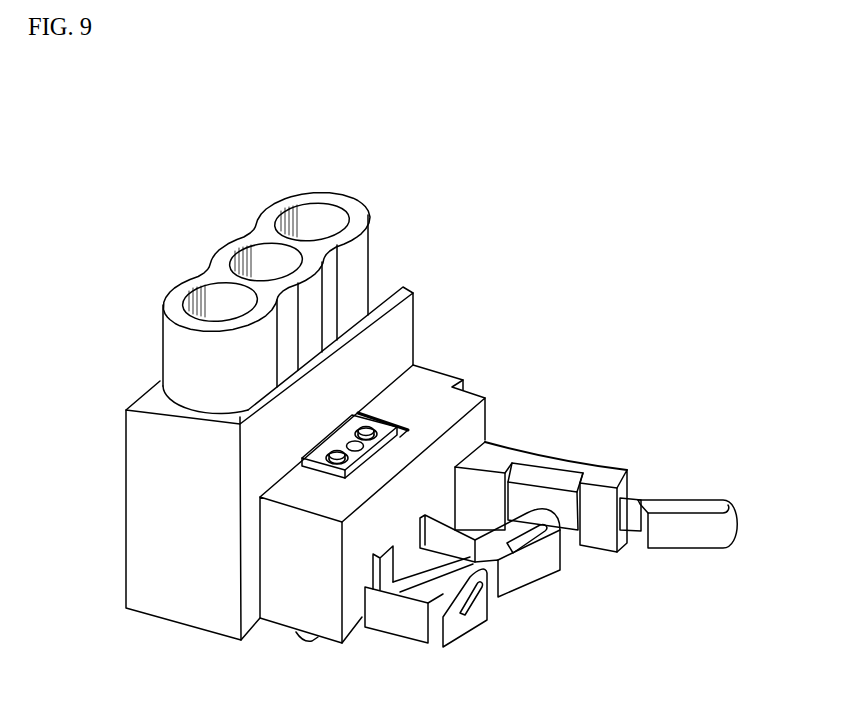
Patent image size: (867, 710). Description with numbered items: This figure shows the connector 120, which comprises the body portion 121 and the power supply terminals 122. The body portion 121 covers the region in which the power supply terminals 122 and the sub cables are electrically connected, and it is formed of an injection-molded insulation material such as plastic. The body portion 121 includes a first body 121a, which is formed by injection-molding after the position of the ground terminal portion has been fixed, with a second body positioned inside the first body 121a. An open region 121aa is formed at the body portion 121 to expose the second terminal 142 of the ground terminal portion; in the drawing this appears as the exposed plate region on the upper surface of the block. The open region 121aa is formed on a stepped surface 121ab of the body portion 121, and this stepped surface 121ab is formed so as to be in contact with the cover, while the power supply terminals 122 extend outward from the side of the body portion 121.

The connector 120 is at (409, 146).
The body portion 121 is at (327, 438).
The first body 121a is at (414, 328).
The stepped surface 121ab is at (410, 405).
The open region 121aa is at (320, 478).
The power supply terminal 122 is at (682, 500).
The second terminal 142 is at (315, 457).